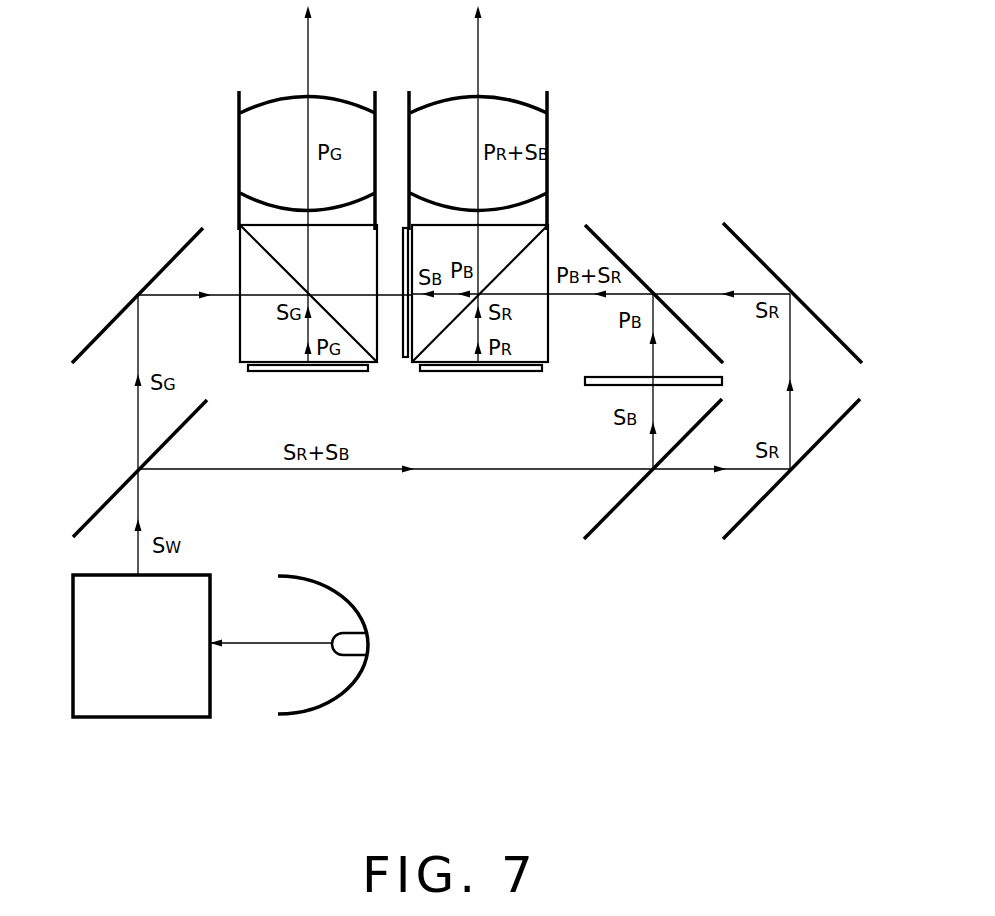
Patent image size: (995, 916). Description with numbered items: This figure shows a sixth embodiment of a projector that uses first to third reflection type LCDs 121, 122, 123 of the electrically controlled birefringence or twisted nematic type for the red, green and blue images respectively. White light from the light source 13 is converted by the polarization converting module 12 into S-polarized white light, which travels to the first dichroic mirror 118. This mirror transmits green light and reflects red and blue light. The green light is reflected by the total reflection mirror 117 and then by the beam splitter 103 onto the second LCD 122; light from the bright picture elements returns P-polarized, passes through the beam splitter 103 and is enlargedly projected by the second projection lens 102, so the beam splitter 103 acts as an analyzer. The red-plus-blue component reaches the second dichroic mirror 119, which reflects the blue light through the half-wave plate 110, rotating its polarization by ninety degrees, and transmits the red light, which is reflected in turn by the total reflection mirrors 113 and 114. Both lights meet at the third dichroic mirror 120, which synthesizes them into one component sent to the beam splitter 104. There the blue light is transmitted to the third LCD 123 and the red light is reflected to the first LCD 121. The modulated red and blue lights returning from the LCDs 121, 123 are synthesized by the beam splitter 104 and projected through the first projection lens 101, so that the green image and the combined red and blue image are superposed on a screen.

The polarization converting module 12 is at (130, 720).
The light source 13 is at (352, 688).
The first projection lens 101 is at (520, 93).
The second projection lens 102 is at (350, 93).
The beam splitter 103 is at (240, 240).
The beam splitter 104 is at (548, 233).
The λ/2 plate 110 is at (617, 377).
The total reflection mirror 113 is at (755, 508).
The total reflection mirror 114 is at (760, 257).
The total reflection mirror 117 is at (98, 335).
The first dichroic mirror 118 is at (108, 498).
The second dichroic mirror 119 is at (617, 508).
The third dichroic mirror 120 is at (615, 252).
The first reflection type LCD 121 is at (520, 372).
The second reflection type LCD 122 is at (268, 372).
The third reflection type LCD 123 is at (400, 356).